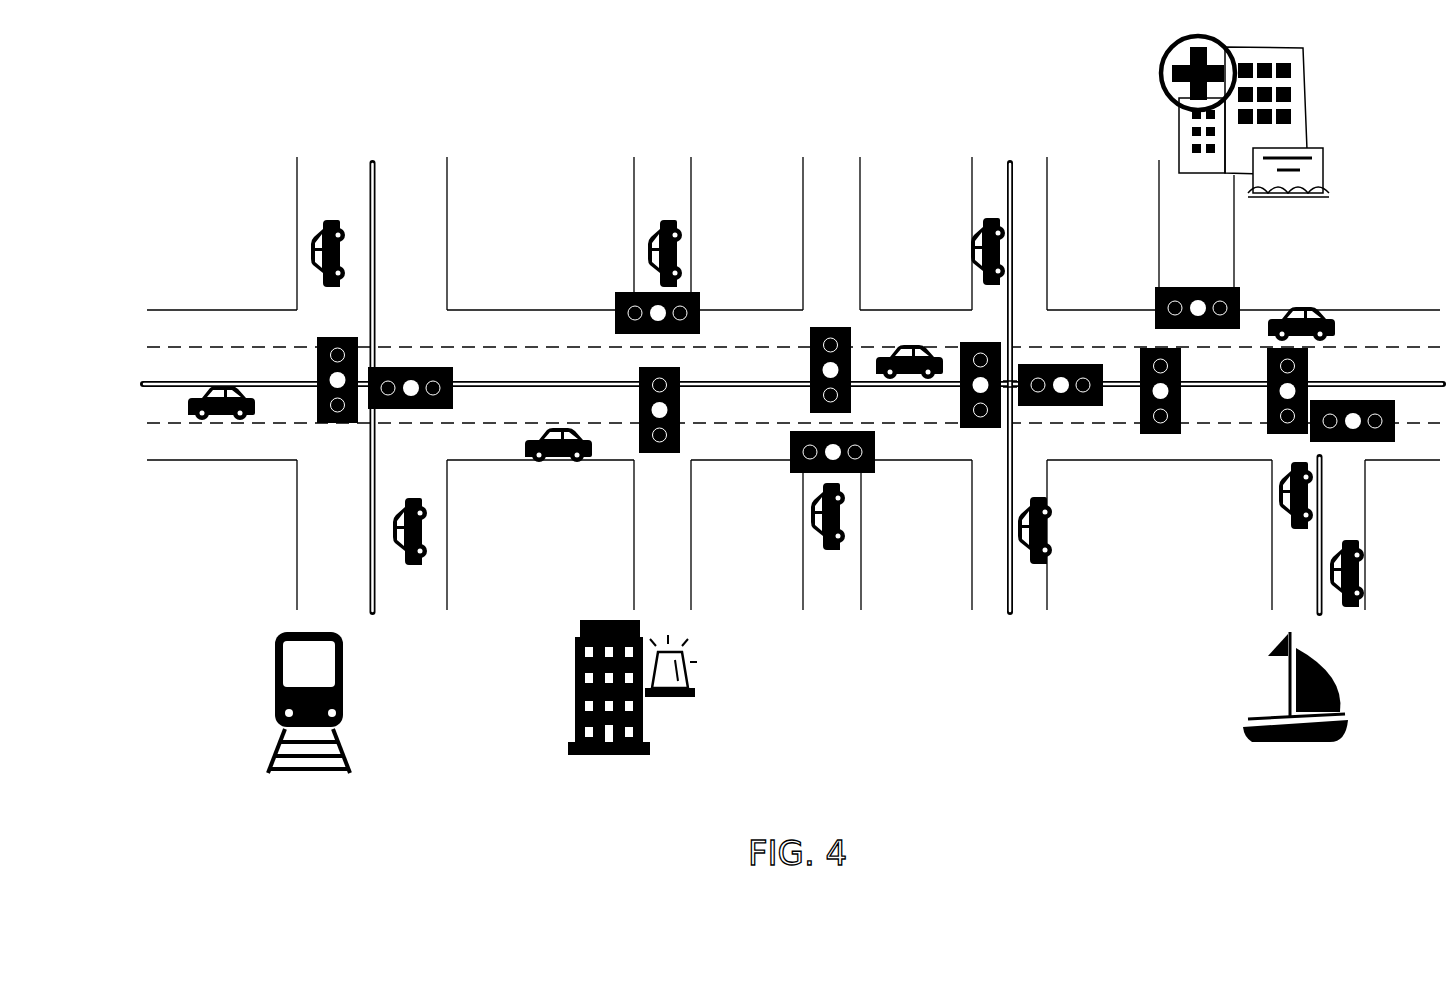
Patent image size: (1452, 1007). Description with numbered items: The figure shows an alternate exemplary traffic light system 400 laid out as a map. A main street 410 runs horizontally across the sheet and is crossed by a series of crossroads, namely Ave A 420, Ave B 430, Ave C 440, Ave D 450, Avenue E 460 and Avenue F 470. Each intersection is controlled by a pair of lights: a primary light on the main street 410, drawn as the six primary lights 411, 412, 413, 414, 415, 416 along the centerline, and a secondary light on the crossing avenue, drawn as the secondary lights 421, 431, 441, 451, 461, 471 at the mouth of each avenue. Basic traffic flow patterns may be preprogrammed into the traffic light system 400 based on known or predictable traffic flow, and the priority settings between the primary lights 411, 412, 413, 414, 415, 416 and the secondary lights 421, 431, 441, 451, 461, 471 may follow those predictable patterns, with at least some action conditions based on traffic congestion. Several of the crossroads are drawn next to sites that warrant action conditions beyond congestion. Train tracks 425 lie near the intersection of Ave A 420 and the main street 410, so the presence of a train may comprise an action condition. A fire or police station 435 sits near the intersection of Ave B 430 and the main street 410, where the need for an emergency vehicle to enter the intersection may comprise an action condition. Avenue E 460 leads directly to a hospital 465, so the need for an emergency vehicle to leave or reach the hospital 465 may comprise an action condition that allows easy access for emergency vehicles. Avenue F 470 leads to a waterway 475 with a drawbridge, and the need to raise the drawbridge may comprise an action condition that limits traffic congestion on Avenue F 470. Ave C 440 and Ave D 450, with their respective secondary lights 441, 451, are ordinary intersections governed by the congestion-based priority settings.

The traffic light system 400 is at (260, 77).
The main street 410 is at (765, 384).
The primary light 411 is at (329, 365).
The primary light 412 is at (638, 404).
The primary light 413 is at (807, 370).
The primary light 414 is at (978, 372).
The primary light 415 is at (1160, 405).
The primary light 416 is at (1262, 391).
The Ave A 420 is at (835, 370).
The secondary light 421 is at (410, 358).
The train tracks 425 is at (292, 687).
The Ave B 430 is at (662, 383).
The secondary light 431 is at (682, 306).
The fire or police station 435 is at (628, 672).
The Ave C 440 is at (832, 378).
The secondary light 441 is at (858, 452).
The Ave D 450 is at (1011, 374).
The secondary light 451 is at (1060, 361).
The Avenue E 460 is at (1163, 235).
The secondary light 461 is at (1176, 304).
The hospital 465 is at (1217, 116).
The Avenue F 470 is at (1291, 535).
The secondary light 471 is at (1373, 431).
The waterway 475 is at (1274, 687).